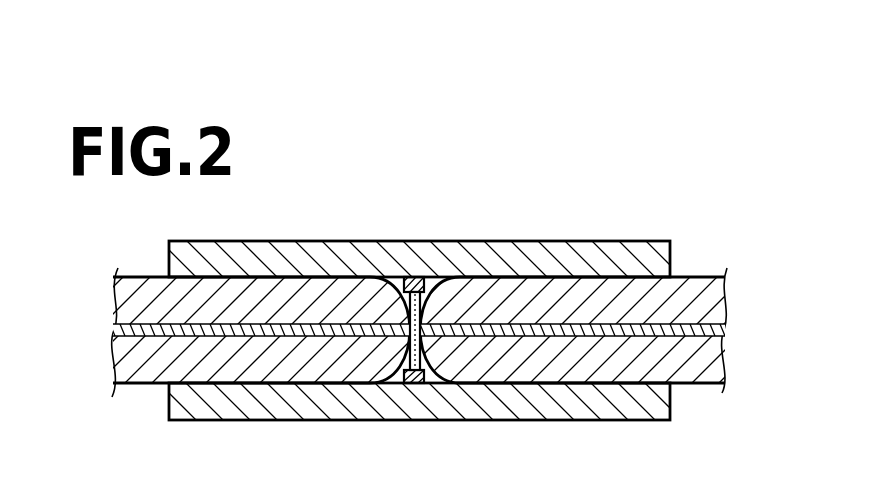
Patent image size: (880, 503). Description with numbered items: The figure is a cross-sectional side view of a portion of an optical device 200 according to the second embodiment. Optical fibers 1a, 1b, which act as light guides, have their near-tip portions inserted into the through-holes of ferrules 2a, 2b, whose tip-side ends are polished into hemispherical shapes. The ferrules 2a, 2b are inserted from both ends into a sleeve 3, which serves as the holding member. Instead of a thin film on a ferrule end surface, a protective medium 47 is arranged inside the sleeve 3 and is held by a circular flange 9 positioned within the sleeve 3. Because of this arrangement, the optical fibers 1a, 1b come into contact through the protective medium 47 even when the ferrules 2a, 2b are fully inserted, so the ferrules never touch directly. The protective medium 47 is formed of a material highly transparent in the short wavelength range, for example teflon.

The optical device 200 is at (653, 165).
The optical fiber 1a is at (135, 328).
The optical fiber 1b is at (697, 323).
The ferrule 2a is at (147, 378).
The ferrule 2b is at (700, 377).
The sleeve 3 is at (390, 256).
The circular flange 9 is at (414, 286).
The protective medium 47 is at (432, 290).